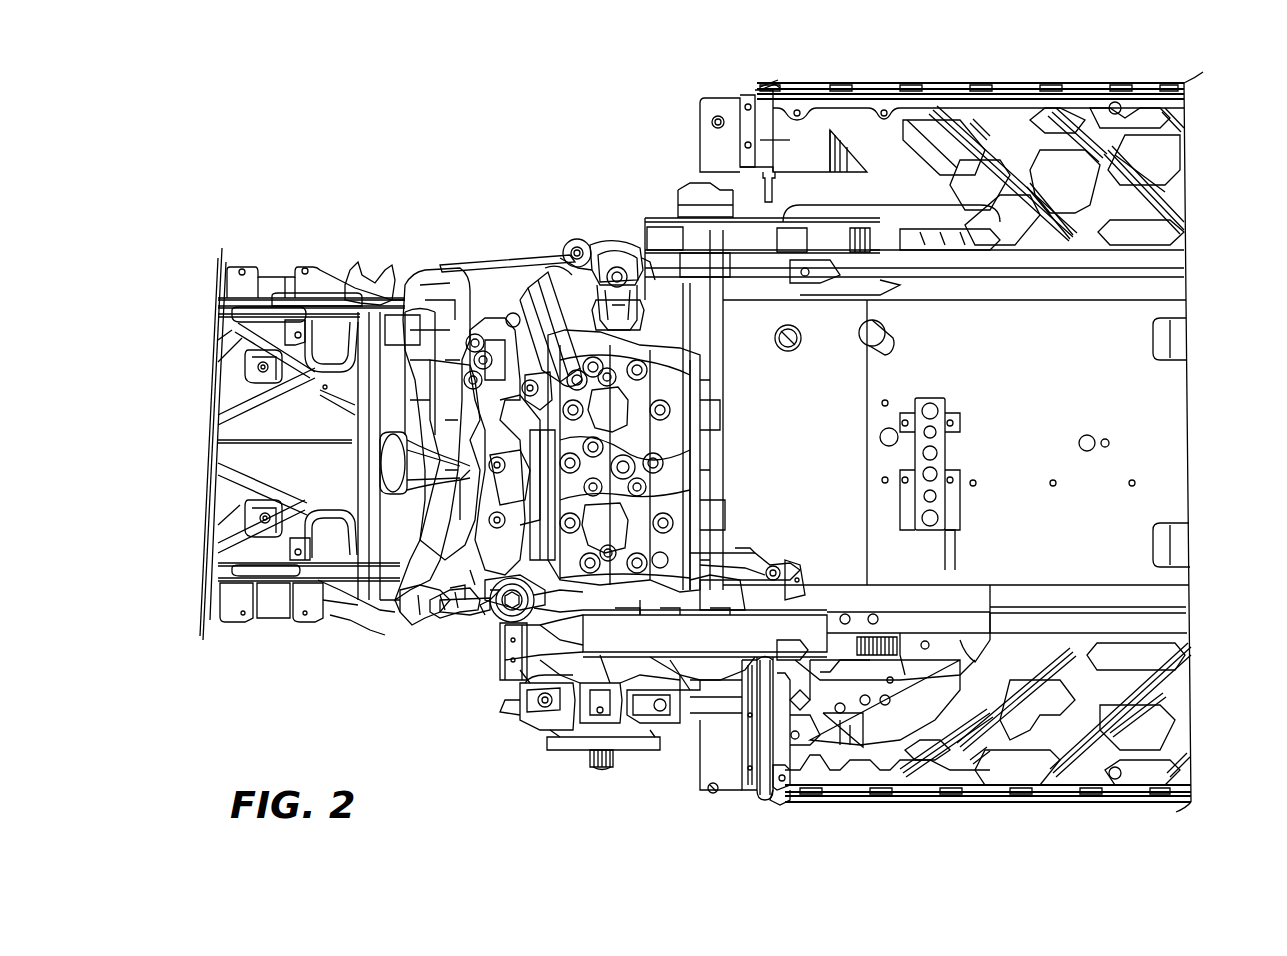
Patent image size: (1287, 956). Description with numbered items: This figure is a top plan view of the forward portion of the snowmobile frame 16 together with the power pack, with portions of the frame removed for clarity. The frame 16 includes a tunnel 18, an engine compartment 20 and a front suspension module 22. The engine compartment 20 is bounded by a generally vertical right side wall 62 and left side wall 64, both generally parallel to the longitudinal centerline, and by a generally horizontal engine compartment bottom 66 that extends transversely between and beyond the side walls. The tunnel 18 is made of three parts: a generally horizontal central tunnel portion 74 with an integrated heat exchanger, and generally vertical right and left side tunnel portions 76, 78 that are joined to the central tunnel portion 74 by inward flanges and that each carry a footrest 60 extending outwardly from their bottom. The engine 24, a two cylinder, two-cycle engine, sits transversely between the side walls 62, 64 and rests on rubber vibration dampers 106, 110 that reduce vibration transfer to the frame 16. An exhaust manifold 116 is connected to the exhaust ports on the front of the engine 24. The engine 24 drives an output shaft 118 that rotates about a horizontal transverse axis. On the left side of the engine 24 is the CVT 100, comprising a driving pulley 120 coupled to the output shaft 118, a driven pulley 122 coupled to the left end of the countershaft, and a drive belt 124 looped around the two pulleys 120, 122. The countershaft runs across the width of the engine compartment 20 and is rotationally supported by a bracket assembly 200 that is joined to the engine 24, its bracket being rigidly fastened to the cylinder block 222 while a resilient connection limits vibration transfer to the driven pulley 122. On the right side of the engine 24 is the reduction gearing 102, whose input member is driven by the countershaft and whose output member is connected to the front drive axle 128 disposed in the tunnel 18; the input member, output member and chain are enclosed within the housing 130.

The frame 16 is at (556, 239).
The tunnel 18 is at (1160, 392).
The engine compartment 20 is at (440, 600).
The front suspension module 22 is at (298, 463).
The engine 24 is at (505, 335).
The footrest 60 is at (905, 150).
The right side wall 62 is at (445, 270).
The left side wall 64 is at (483, 592).
The engine compartment bottom 66 is at (465, 615).
The central tunnel portion 74 is at (1105, 473).
The right side tunnel portion 76 is at (1100, 258).
The left side tunnel portion 78 is at (1050, 625).
The CVT 100 is at (603, 768).
The reduction gearing 102 is at (770, 202).
The vibration damper 106 is at (505, 590).
The vibration damper 110 is at (605, 243).
The exhaust manifold 116 is at (425, 345).
The output shaft 118 is at (617, 760).
The driving pulley 120 is at (527, 700).
The driven pulley 122 is at (753, 657).
The drive belt 124 is at (708, 789).
The front drive axle 128 is at (870, 640).
The housing 130 is at (712, 236).
The bracket assembly 200 is at (750, 551).
The cylinder block 222 is at (535, 385).